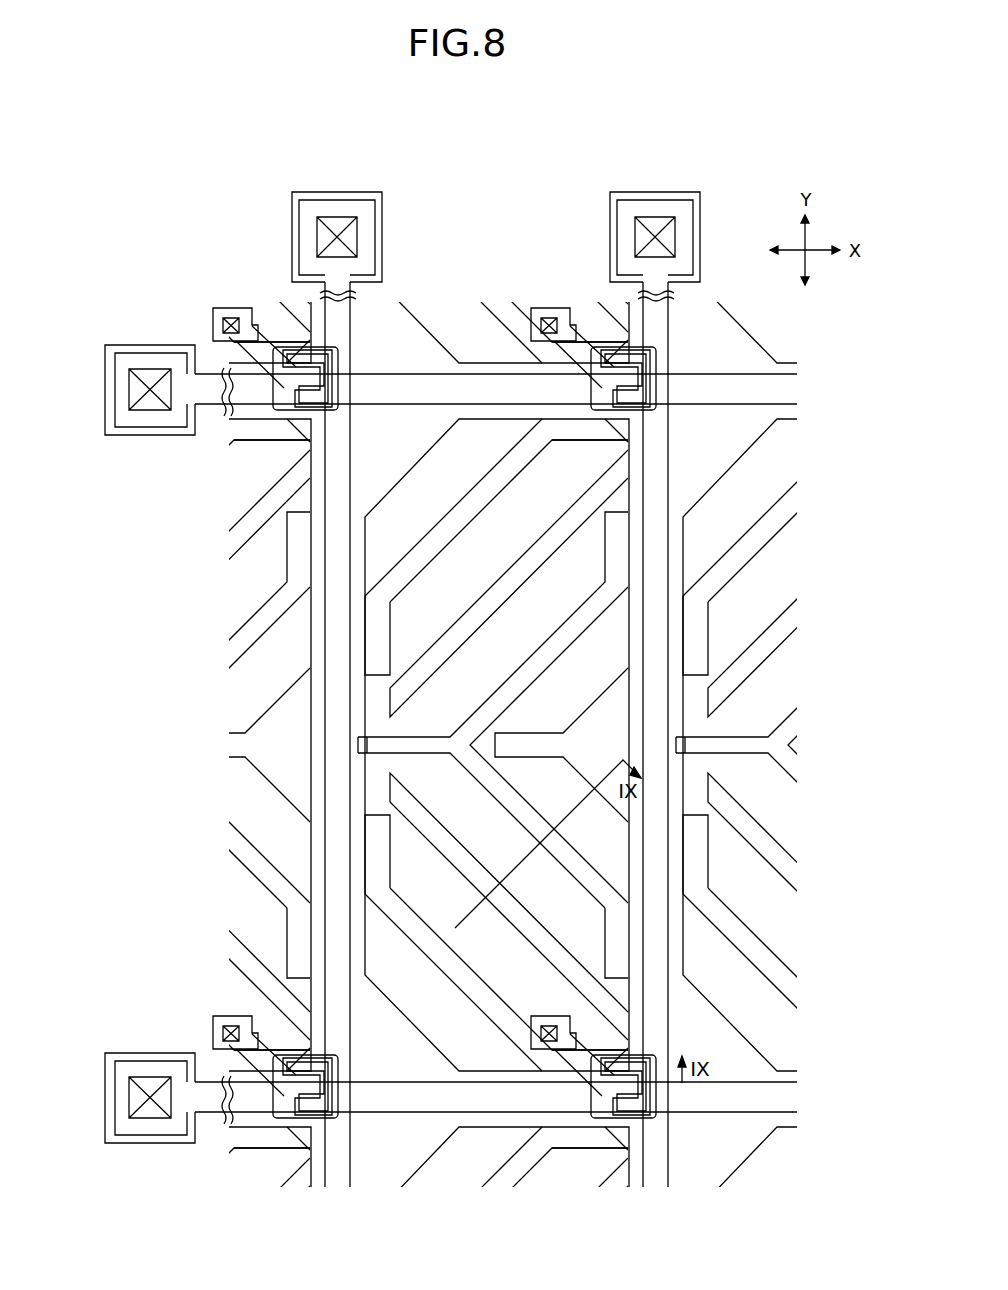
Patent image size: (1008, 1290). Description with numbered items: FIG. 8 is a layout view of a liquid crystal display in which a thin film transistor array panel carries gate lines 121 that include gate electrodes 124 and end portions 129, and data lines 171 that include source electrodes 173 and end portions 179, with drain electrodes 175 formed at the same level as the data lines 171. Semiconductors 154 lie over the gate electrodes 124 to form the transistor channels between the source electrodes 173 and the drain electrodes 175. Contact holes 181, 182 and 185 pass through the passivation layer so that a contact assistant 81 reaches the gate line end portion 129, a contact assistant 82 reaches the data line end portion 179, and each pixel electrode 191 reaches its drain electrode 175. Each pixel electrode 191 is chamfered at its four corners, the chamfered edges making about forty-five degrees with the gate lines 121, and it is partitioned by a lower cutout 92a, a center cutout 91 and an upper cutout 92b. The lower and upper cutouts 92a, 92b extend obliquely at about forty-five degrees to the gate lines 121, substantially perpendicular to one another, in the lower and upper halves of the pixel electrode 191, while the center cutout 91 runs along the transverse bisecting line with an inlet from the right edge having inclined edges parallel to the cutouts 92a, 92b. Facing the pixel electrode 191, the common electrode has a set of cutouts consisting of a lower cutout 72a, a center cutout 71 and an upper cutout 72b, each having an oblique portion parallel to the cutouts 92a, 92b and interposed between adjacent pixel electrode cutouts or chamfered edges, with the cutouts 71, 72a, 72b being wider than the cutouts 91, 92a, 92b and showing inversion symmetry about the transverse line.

The center cutout 71 is at (473, 710).
The lower cutout 72a is at (423, 918).
The upper cutout 72b is at (443, 518).
The contact assistant 81 is at (105, 362).
The contact assistant 82 is at (292, 250).
The center cutout 91 is at (600, 700).
The lower cutout 92a is at (537, 922).
The upper cutout 92b is at (428, 638).
The gate line 121 is at (482, 374).
The gate electrode 124 is at (662, 1052).
The end portion 129 is at (105, 393).
The semiconductor 154 is at (673, 1103).
The data line 171 is at (350, 812).
The source electrode 173 is at (593, 1113).
The drain electrode 175 is at (537, 1052).
The end portion 179 is at (350, 193).
The contact hole 181 is at (160, 369).
The contact hole 182 is at (317, 222).
The contact hole 185 is at (533, 1033).
The pixel electrode 191 is at (472, 1075).